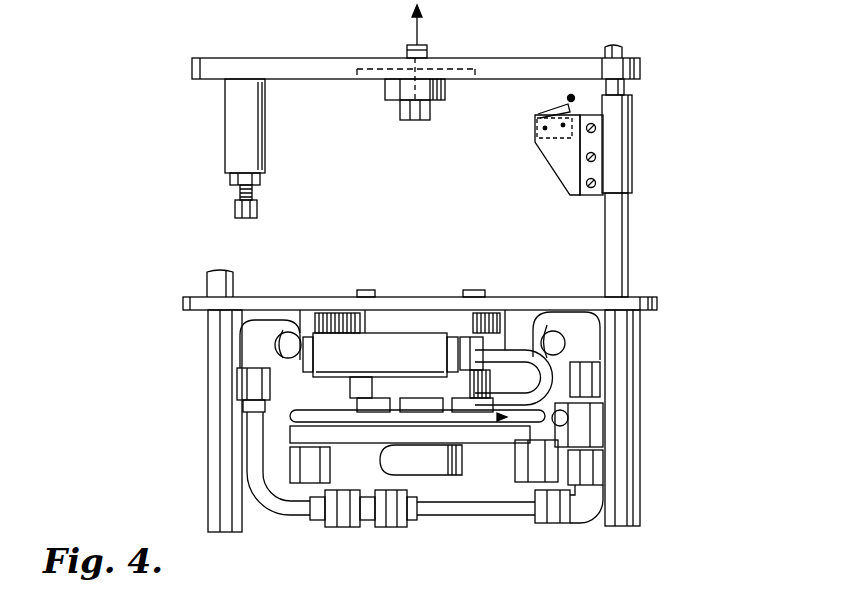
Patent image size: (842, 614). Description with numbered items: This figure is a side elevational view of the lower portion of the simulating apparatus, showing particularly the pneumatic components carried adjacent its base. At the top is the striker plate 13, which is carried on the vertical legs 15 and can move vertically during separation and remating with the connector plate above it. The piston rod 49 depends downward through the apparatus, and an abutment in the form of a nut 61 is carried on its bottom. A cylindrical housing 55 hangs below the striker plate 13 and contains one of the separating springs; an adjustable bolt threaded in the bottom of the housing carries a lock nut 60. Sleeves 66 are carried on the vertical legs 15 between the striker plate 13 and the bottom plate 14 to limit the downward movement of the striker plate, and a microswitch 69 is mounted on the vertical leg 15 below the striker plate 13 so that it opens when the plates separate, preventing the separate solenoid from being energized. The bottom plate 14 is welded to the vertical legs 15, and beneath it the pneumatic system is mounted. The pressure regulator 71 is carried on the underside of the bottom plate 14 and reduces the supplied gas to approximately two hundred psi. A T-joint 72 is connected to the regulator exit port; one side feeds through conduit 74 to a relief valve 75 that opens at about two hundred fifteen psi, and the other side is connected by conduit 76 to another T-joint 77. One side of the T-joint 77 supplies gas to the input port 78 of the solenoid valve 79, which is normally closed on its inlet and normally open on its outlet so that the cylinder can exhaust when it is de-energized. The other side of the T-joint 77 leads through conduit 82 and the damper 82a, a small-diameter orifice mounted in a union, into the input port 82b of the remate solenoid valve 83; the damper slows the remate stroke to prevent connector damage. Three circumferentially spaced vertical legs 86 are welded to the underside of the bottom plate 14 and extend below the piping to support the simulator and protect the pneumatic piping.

The striker plate 13 is at (192, 70).
The bottom plate 14 is at (640, 298).
The vertical legs 15 is at (624, 86).
The piston rod 49 is at (422, 47).
The cylindrical housing 55 is at (225, 148).
The lock nut 60 is at (232, 180).
The nut 61 is at (447, 97).
The sleeves 66 is at (632, 108).
The microswitch 69 is at (535, 121).
The pressure regulator 71 is at (440, 318).
The T-joint 72 is at (443, 400).
The conduit 74 is at (512, 352).
The relief valve 75 is at (378, 340).
The conduit 76 is at (337, 430).
The T-joint 77 is at (605, 421).
The input port 78 is at (590, 338).
The solenoid valve 79 is at (508, 435).
The conduit 82 is at (452, 518).
The damper 82a is at (370, 527).
The input port 82b is at (258, 335).
The remate solenoid valve 83 is at (277, 440).
The vertical legs 86 is at (207, 395).